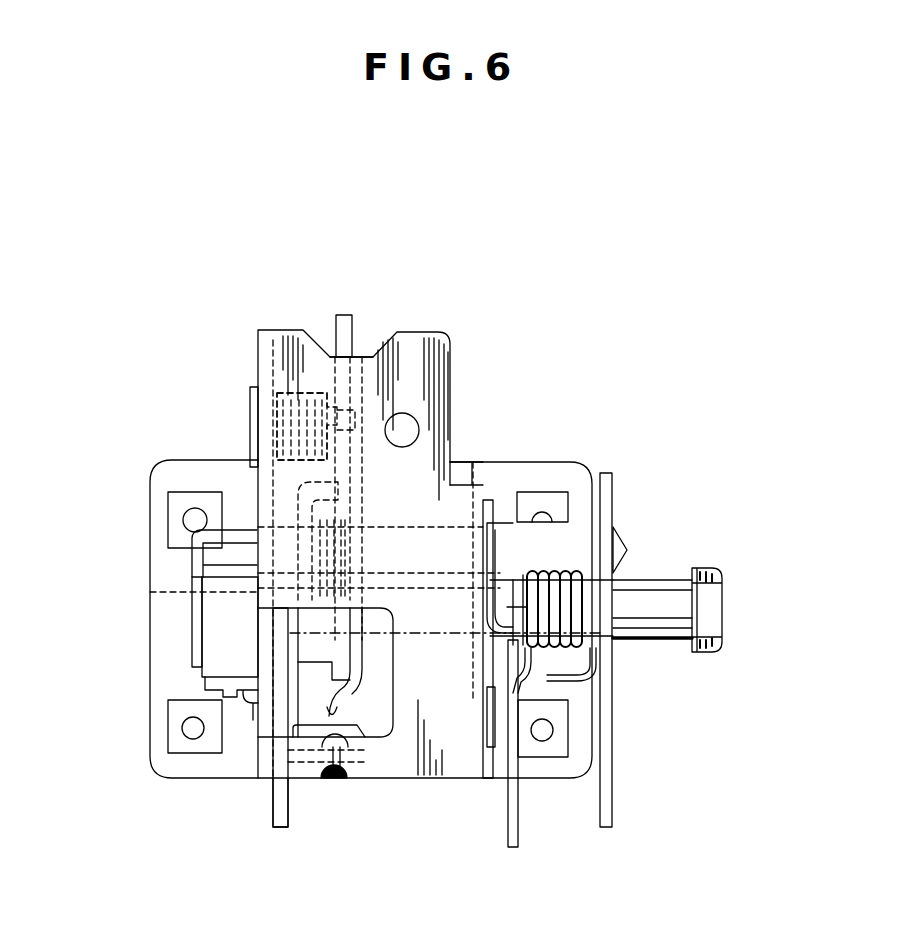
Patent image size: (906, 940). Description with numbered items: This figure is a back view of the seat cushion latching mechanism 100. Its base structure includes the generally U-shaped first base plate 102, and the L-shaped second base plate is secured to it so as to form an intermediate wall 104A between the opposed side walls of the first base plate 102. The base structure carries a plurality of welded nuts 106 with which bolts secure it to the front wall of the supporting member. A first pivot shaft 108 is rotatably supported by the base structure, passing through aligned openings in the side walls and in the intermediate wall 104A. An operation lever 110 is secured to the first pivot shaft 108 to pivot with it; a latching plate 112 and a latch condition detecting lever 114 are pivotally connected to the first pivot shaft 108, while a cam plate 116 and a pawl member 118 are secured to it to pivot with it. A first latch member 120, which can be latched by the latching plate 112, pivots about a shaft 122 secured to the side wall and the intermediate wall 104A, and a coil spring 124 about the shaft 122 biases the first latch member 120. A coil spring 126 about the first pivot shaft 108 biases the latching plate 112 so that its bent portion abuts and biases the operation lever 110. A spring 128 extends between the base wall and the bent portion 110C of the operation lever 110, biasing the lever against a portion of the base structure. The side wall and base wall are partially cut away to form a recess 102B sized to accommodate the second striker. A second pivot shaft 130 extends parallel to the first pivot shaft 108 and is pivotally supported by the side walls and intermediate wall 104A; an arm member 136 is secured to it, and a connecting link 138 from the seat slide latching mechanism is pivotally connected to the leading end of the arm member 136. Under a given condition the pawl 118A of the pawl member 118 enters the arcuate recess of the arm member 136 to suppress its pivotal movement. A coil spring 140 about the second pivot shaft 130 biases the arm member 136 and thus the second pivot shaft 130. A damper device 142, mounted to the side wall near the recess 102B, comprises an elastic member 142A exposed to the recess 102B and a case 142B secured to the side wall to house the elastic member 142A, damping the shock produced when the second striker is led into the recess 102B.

The seat cushion latching mechanism 100 is at (545, 288).
The first base plate 102 is at (432, 330).
The recess 102B is at (266, 728).
The intermediate wall 104A is at (358, 332).
The welded nuts 106 is at (178, 497).
The first pivot shaft 108 is at (622, 535).
The operation lever 110 is at (280, 828).
The bent portion 110C is at (360, 737).
The latching plate 112 is at (347, 690).
The latch condition detecting lever 114 is at (287, 737).
The cam plate 116 is at (612, 742).
The pawl member 118 is at (488, 500).
The pawl 118A is at (505, 600).
The first latch member 120 is at (340, 316).
The shaft 122 is at (250, 400).
The coil spring 124 is at (305, 390).
The coil spring 126 is at (260, 580).
The spring 128 is at (340, 782).
The second pivot shaft 130 is at (713, 610).
The arm member 136 is at (495, 752).
The connecting link 138 is at (518, 845).
The coil spring 140 is at (598, 658).
The damper device 142 is at (186, 618).
The elastic member 142A is at (218, 640).
The case 142B is at (207, 678).